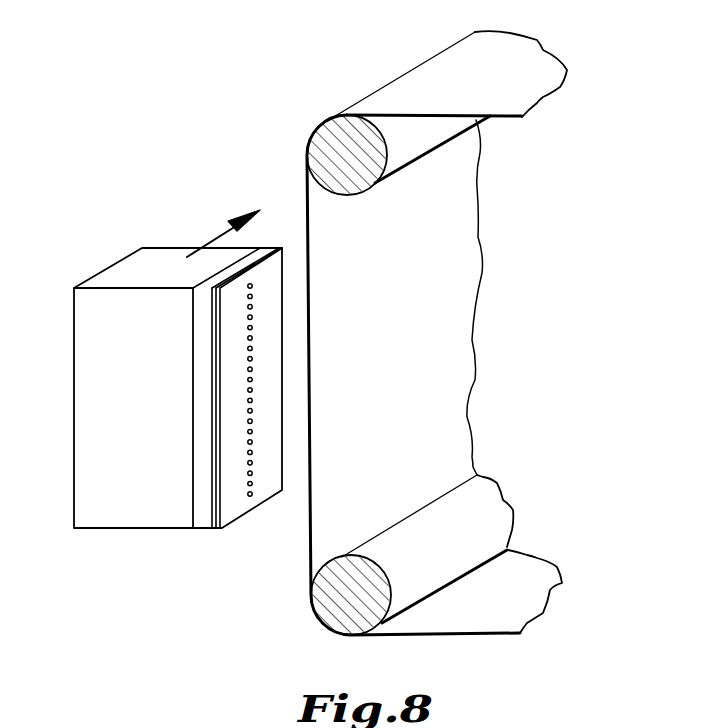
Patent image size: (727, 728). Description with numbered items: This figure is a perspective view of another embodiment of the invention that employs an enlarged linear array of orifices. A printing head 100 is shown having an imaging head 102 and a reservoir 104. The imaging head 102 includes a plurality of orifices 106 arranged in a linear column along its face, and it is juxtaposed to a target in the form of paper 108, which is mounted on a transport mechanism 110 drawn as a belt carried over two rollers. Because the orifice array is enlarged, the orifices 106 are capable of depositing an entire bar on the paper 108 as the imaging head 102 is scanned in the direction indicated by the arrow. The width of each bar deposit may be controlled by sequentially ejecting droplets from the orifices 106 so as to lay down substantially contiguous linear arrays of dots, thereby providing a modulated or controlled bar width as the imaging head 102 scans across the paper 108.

The printing head 100 is at (163, 248).
The imaging head 102 is at (205, 514).
The reservoir 104 is at (102, 343).
The orifices 106 is at (254, 462).
The paper 108 is at (442, 283).
The transport mechanism 110 is at (362, 168).